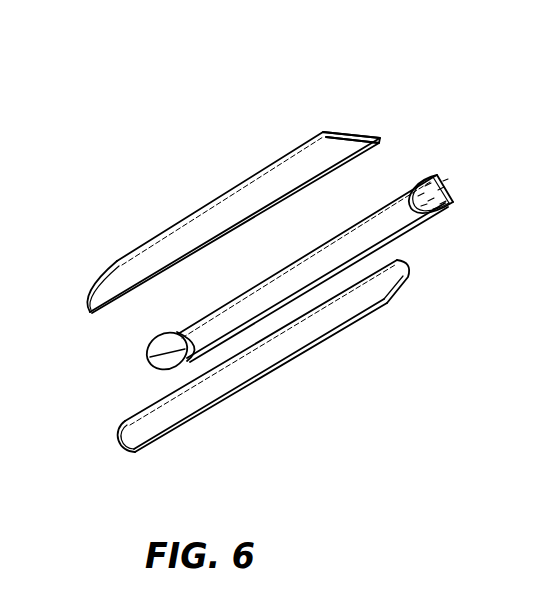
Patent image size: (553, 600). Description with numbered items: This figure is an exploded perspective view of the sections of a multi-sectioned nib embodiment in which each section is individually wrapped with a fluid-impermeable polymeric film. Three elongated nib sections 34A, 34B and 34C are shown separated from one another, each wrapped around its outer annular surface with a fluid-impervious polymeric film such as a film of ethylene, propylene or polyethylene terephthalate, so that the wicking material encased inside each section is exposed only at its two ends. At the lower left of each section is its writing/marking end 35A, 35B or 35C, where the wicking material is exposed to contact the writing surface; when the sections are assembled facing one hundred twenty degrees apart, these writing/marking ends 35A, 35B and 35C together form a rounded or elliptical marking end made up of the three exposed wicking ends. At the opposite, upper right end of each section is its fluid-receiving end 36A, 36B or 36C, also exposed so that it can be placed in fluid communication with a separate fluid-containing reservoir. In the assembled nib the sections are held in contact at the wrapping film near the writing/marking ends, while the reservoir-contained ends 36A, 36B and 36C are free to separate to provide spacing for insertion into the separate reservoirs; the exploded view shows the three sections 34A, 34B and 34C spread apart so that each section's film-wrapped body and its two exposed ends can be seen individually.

The nib section 34A is at (312, 278).
The nib section 34B is at (218, 187).
The nib section 34C is at (287, 387).
The writing/marking end 35A is at (155, 358).
The writing/marking end 35B is at (86, 293).
The writing/marking end 35C is at (127, 455).
The fluid-receiving end 36A is at (441, 191).
The fluid-receiving end 36B is at (355, 132).
The fluid-receiving end 36C is at (404, 287).